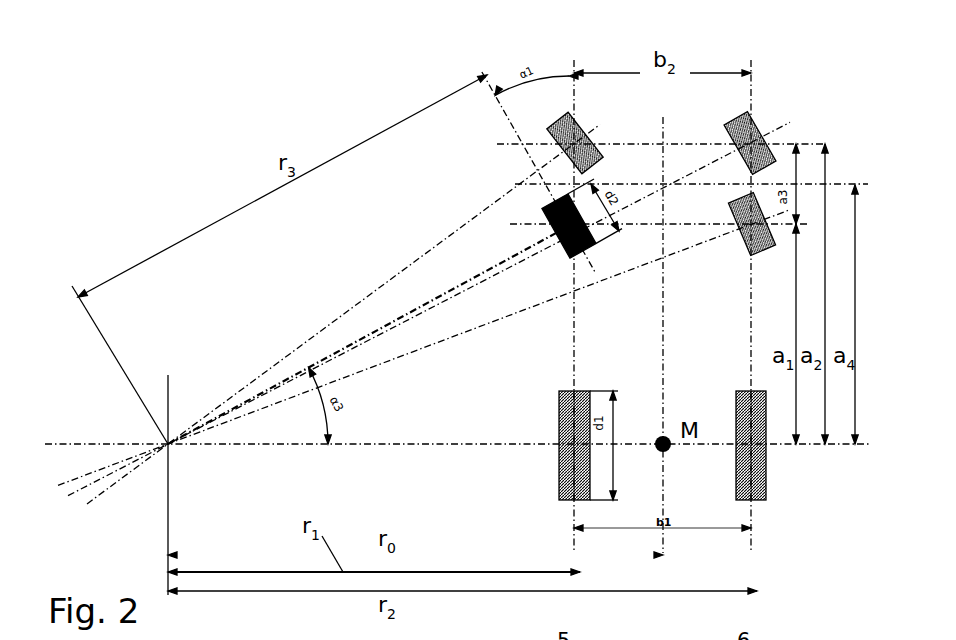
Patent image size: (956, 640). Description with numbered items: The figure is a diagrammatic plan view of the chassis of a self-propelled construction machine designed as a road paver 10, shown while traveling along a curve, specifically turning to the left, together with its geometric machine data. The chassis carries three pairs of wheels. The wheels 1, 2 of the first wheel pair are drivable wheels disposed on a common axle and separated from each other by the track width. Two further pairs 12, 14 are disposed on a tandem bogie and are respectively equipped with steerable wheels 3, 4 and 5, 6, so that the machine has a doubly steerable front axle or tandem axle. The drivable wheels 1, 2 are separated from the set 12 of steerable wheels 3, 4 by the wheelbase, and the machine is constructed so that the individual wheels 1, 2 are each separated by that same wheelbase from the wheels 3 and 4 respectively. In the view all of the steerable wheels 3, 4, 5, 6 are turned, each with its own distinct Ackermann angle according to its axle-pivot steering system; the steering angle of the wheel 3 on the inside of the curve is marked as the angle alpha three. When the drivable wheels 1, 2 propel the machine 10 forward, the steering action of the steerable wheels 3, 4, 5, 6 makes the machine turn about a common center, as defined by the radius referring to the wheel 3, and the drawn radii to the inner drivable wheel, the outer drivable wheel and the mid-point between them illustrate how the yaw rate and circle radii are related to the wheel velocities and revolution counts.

The drivable wheel 1 is at (566, 442).
The drivable wheel 2 is at (747, 442).
The steerable wheel 3 is at (568, 249).
The steerable wheel 4 is at (745, 237).
The steerable wheel 5 is at (563, 118).
The steerable wheel 6 is at (742, 122).
The road paver 10 is at (297, 107).
The set of steerable wheels 12 is at (500, 227).
The pair of steerable wheels 14 is at (486, 146).